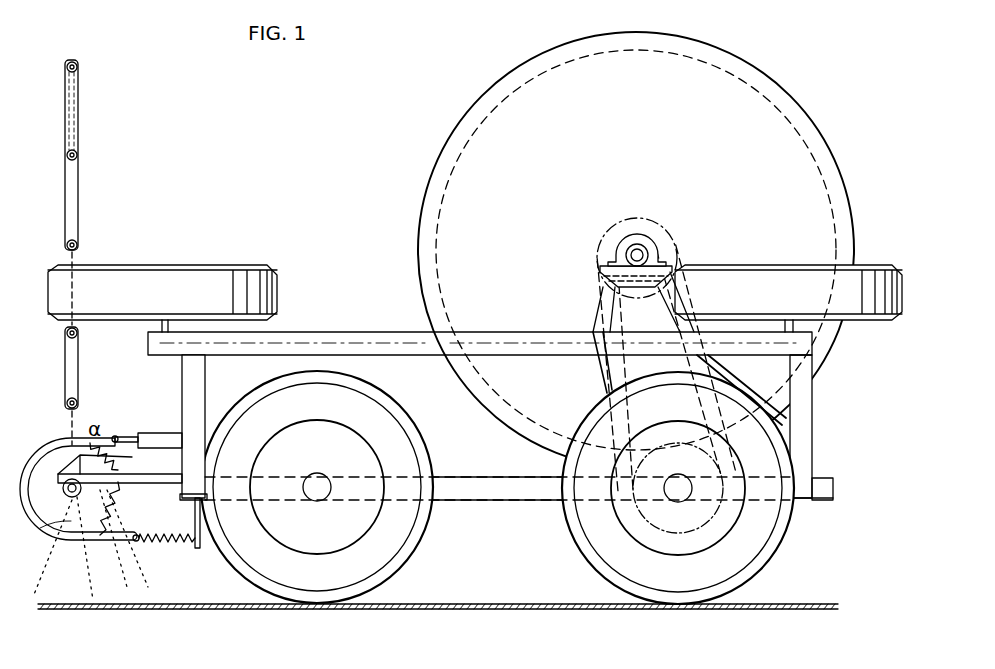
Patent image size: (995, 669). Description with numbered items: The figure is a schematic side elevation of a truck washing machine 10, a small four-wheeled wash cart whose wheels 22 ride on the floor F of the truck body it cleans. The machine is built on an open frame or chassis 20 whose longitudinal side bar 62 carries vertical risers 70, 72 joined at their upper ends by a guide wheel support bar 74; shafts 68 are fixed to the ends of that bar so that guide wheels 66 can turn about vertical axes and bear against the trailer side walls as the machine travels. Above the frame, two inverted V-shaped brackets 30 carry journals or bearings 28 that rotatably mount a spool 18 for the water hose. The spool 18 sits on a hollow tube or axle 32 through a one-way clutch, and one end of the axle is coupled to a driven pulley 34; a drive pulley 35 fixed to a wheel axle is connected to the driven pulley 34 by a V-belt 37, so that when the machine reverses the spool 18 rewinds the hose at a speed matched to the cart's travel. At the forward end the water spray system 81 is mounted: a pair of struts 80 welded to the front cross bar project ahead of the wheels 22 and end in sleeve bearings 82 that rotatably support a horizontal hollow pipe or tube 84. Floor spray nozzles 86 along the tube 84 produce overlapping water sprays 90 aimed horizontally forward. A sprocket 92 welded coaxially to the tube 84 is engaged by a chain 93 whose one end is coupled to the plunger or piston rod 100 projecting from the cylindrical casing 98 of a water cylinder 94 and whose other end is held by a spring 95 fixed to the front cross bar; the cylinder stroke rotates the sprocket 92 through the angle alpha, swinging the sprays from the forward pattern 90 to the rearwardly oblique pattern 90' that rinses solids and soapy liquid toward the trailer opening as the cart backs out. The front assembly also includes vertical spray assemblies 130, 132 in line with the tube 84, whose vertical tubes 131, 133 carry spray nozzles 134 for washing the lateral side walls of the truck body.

The truck washing machine 10 is at (418, 80).
The spool 18 is at (820, 118).
The open frame or chassis 20 is at (815, 503).
The wheels 22 is at (422, 538).
The journals or bearings 28 is at (655, 237).
The brackets 30 is at (600, 313).
The hollow tube or axle 32 is at (628, 247).
The driven pulley 34 is at (656, 198).
The drive pulley 35 is at (622, 545).
The V-belt 37 is at (623, 419).
The longitudinal side bar 62 is at (526, 495).
The guide wheels 66 is at (246, 265).
The shafts 68 is at (778, 320).
The vertical riser 70 is at (205, 392).
The vertical riser 72 is at (812, 433).
The guide wheel support bar 74 is at (528, 338).
The struts 80 is at (150, 490).
The water spray system 81 is at (113, 461).
The sleeve bearings 82 is at (112, 490).
The hollow pipe or tube 84 is at (62, 493).
The floor spray nozzles 86 is at (50, 522).
The water sprays 90 is at (63, 570).
The rearwardly oblique spray pattern 90' is at (125, 566).
The sprocket 92 is at (55, 440).
The chain 93 is at (125, 541).
The water cylinder 94 is at (168, 434).
The spring 95 is at (170, 546).
The cylindrical casing 98 is at (159, 430).
The plunger or piston rod 100 is at (130, 436).
The vertical spray assembly 130 is at (84, 215).
The vertical tube 131 is at (78, 137).
The vertical spray assembly 132 is at (82, 360).
The vertical tube 133 is at (68, 368).
The spray nozzles 134 is at (80, 68).
The floor F is at (245, 602).